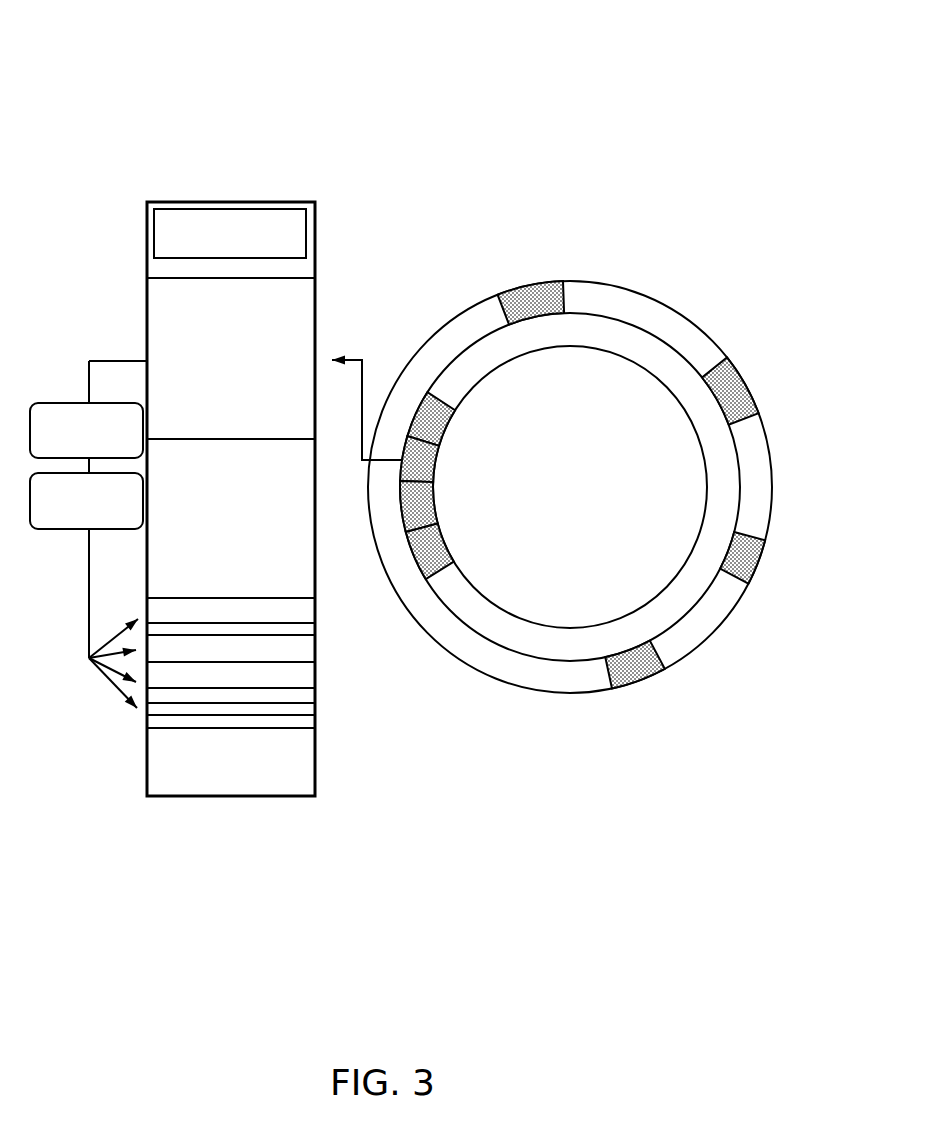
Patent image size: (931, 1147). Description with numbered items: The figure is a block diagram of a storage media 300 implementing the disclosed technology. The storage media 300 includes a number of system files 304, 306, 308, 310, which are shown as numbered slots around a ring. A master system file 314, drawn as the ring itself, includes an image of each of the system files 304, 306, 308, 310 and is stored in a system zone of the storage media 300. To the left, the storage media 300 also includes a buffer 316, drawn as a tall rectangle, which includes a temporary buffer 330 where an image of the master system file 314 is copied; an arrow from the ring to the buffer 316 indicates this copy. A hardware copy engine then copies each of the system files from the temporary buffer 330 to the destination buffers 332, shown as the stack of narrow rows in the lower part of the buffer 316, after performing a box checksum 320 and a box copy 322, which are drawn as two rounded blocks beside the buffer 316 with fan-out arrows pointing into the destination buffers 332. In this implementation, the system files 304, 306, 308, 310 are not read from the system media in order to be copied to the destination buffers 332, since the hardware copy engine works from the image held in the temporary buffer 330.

The storage media 300 is at (118, 61).
The system file 304 is at (532, 279).
The system file 306 is at (750, 390).
The system file 308 is at (760, 557).
The system file 310 is at (637, 687).
The master system file 314 is at (470, 476).
The buffer 316 is at (252, 188).
The box checksum 320 is at (60, 402).
The box copy 322 is at (58, 531).
The temporary buffer 330 is at (230, 343).
The destination buffers 332 is at (315, 598).